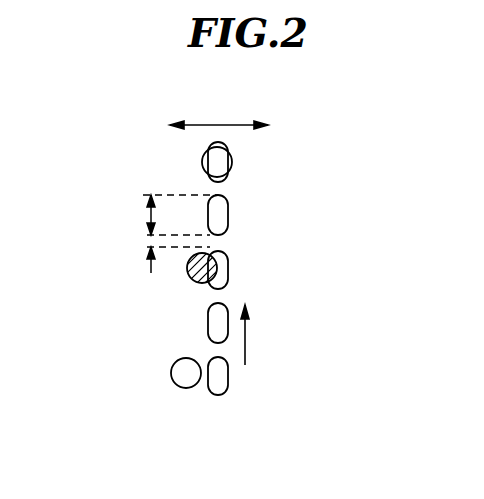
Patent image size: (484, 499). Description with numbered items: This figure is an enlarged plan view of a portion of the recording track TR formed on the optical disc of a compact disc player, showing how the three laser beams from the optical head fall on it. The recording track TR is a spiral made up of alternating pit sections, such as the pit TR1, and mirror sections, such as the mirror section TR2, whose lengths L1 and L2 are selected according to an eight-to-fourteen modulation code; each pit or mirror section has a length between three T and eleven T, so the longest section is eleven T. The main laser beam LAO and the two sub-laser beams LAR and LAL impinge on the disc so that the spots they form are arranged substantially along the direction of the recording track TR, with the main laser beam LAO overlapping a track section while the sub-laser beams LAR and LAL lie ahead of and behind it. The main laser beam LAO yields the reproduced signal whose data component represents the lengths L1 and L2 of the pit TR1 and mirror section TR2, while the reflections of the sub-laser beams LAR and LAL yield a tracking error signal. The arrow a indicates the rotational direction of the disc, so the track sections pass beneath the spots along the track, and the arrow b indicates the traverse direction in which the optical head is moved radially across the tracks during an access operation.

The sub-laser beam LAR is at (232, 162).
The pit TR1 is at (225, 213).
The mirror section TR2 is at (223, 242).
The main laser beam LAO is at (217, 272).
The sub-laser beam LAL is at (170, 371).
The recording track TR is at (231, 379).
The length of pit L1 is at (150, 212).
The length of mirror section L2 is at (151, 243).
The rotational direction a is at (247, 342).
The traverse direction b is at (217, 125).